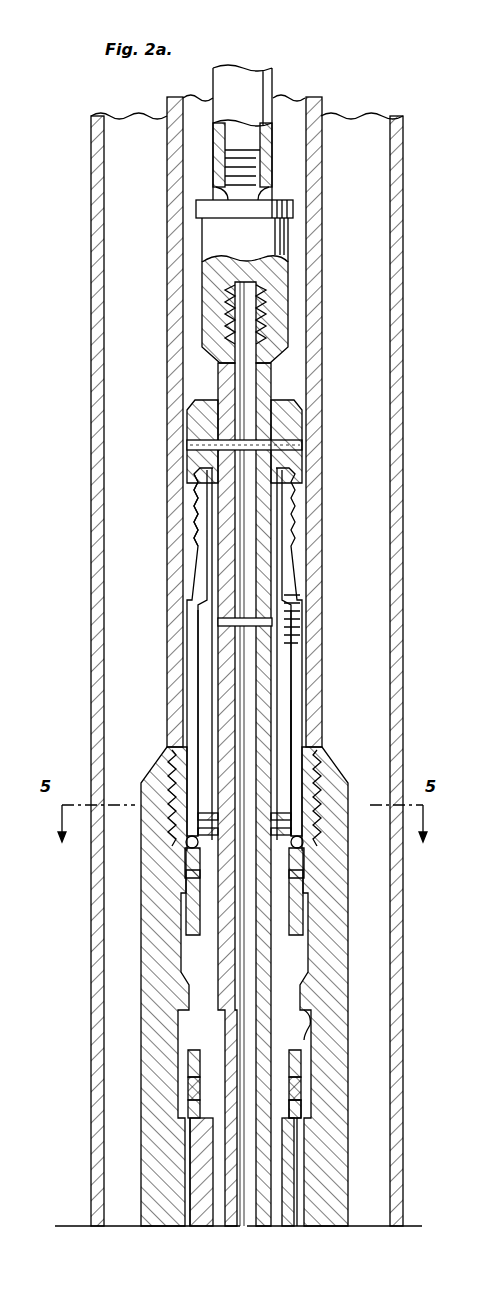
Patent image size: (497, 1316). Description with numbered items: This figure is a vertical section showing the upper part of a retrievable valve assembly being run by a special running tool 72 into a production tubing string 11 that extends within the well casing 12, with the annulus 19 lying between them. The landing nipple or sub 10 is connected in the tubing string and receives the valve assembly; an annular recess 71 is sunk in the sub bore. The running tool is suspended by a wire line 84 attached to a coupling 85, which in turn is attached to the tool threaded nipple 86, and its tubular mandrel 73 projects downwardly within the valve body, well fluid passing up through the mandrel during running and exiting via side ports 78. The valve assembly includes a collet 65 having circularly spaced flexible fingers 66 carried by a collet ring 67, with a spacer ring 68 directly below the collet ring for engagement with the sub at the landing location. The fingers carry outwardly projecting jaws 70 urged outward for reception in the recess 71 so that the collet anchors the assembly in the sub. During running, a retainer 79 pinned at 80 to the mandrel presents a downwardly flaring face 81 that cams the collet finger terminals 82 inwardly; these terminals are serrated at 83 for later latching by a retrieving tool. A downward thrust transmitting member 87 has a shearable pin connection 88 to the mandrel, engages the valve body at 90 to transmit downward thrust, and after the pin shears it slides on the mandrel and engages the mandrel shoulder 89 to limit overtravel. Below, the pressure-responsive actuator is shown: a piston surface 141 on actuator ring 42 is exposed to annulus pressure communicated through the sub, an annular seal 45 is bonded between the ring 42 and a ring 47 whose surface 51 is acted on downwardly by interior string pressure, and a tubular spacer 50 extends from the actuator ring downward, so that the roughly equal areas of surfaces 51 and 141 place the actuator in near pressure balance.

The sub 10 is at (356, 965).
The production tubing string 11 is at (168, 292).
The well casing 12 is at (104, 588).
The annulus 19 is at (118, 940).
The actuator ring 42 is at (300, 1105).
The annular seal 45 is at (303, 1080).
The ring 47 is at (300, 1060).
The tubular spacer 50 is at (298, 1182).
The surface 51 is at (190, 1052).
The collet 65 is at (306, 730).
The flexible fingers 66 is at (205, 735).
The collet ring 67 is at (305, 870).
The spacer ring 68 is at (300, 912).
The jaws 70 is at (300, 608).
The annular recess 71 is at (310, 1024).
The running tool 72 is at (278, 704).
The tubular mandrel 73 is at (225, 708).
The side ports 78 is at (262, 625).
The retainer 79 is at (300, 422).
The pin 80 is at (196, 440).
The downwardly flaring face 81 is at (196, 488).
The collet finger terminals 82 is at (296, 520).
The serrations 83 is at (198, 535).
The wire line 84 is at (268, 84).
The coupling 85 is at (205, 236).
The threaded nipple 86 is at (222, 330).
The downward thrust transmitting member 87 is at (292, 826).
The shearable pin connection 88 is at (205, 830).
The mandrel shoulder 89 is at (280, 804).
The engagement location 90 is at (205, 850).
The piston surface 141 is at (190, 1120).